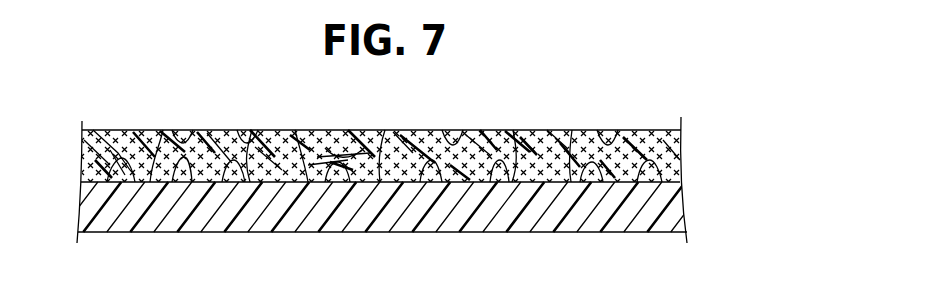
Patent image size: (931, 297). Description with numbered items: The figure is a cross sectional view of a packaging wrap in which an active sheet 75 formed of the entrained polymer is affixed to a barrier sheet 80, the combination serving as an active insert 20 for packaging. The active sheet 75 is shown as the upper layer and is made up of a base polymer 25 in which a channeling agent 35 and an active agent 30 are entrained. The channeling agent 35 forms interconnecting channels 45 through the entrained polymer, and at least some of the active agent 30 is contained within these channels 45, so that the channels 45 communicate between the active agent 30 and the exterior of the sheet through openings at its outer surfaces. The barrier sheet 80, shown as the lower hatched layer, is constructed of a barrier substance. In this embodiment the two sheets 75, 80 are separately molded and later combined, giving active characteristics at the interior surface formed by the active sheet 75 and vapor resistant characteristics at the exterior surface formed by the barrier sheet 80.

The active insert 20 is at (420, 173).
The base polymer 25 is at (105, 131).
The active agent 30 is at (218, 130).
The channeling agent 35 is at (338, 130).
The interconnecting channels 45 is at (163, 130).
The active sheet 75 is at (441, 123).
The barrier sheet 80 is at (704, 218).